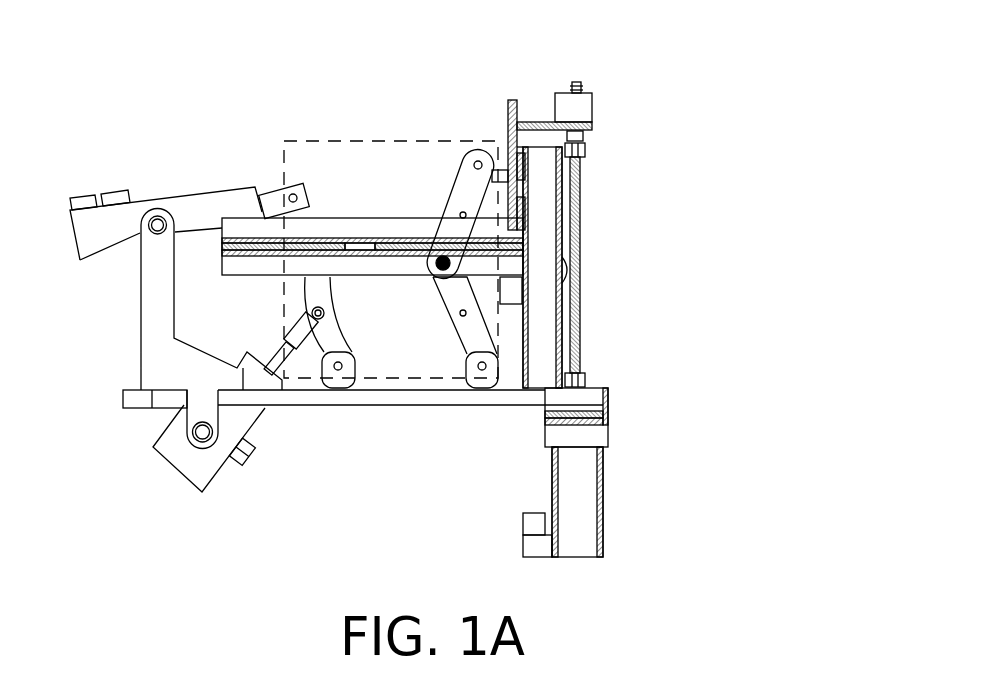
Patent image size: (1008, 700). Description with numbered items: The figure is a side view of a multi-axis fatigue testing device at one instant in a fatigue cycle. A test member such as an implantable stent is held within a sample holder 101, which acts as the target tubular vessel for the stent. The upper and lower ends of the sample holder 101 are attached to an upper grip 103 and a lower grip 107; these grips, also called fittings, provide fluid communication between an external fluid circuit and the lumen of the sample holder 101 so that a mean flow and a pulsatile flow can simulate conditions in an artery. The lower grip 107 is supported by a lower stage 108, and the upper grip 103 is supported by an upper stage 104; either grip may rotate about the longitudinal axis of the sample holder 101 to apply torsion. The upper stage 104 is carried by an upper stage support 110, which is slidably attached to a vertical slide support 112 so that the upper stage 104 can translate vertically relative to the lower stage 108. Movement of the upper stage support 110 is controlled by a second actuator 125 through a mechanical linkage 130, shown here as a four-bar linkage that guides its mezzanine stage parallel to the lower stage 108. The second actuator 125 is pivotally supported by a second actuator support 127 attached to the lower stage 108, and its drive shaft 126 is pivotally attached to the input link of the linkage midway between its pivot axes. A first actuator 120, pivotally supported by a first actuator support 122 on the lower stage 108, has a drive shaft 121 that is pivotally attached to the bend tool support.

The sample holder 101 is at (583, 257).
The upper grip 103 is at (587, 150).
The upper stage 104 is at (541, 122).
The lower grip 107 is at (583, 372).
The lower stage 108 is at (303, 410).
The upper stage support 110 is at (503, 137).
The vertical slide support 112 is at (585, 203).
The first actuator 120 is at (148, 208).
The drive shaft 121 is at (270, 190).
The first actuator support 122 is at (140, 347).
The second actuator 125 is at (255, 420).
The drive shaft 126 is at (276, 347).
The second actuator support 127 is at (187, 413).
The mechanical linkage 130 is at (318, 140).